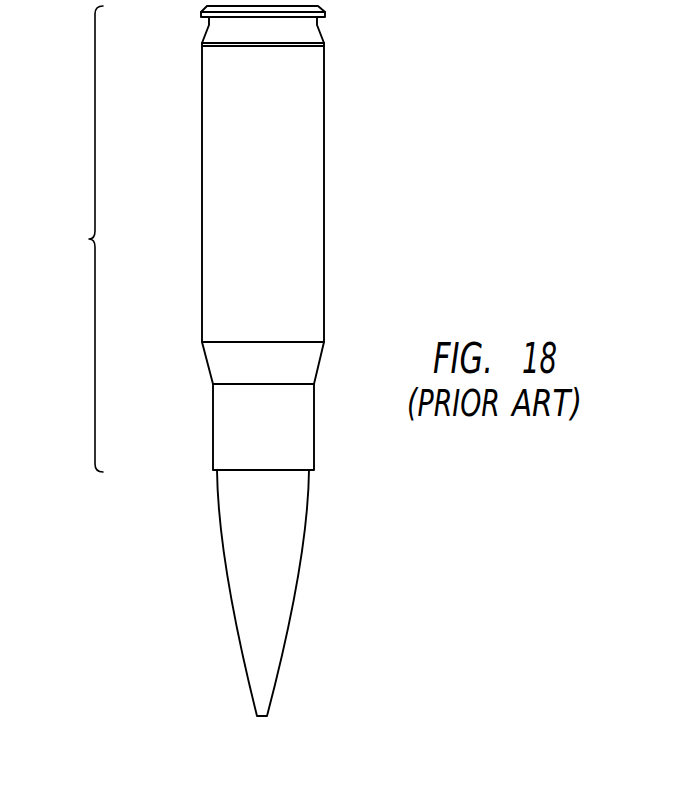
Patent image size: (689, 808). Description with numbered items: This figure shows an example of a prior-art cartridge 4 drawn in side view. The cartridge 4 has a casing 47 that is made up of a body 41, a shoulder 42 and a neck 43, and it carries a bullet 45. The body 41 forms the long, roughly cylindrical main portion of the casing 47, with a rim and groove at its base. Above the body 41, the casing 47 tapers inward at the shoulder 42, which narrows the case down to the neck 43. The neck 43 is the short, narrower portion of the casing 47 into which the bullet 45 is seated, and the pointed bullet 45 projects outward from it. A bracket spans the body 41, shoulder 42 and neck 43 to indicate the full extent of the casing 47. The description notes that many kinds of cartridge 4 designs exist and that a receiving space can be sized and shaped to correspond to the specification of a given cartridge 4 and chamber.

The cartridge 4 is at (415, 127).
The body 41 is at (324, 70).
The shoulder 42 is at (207, 367).
The neck 43 is at (209, 420).
The bullet 45 is at (302, 517).
The casing 47 is at (89, 239).